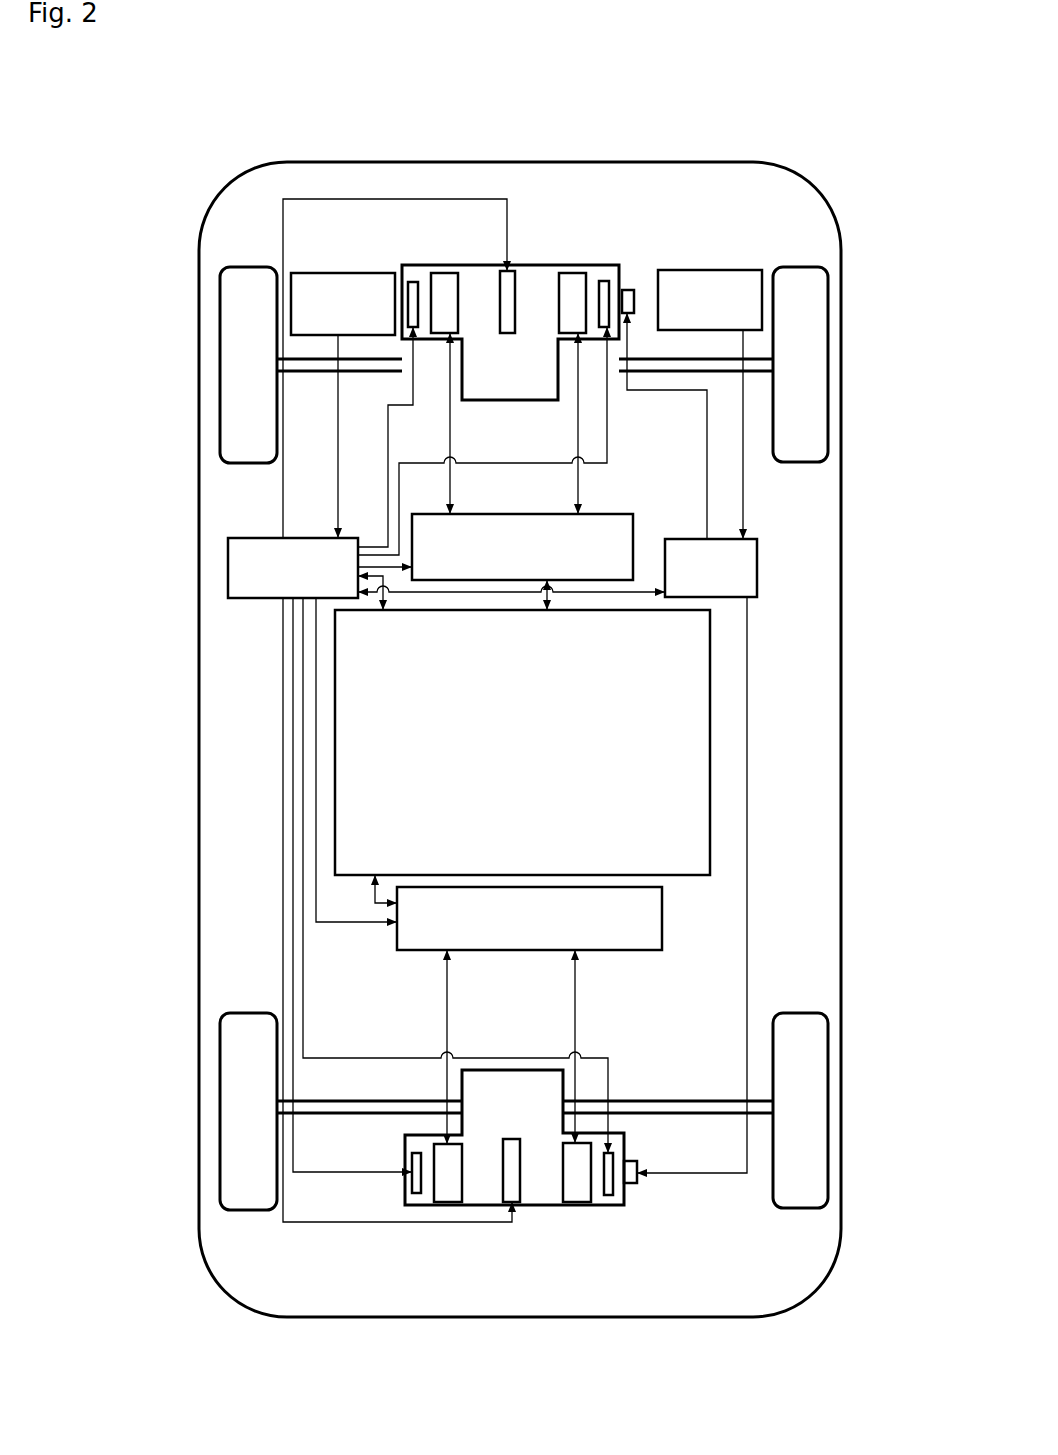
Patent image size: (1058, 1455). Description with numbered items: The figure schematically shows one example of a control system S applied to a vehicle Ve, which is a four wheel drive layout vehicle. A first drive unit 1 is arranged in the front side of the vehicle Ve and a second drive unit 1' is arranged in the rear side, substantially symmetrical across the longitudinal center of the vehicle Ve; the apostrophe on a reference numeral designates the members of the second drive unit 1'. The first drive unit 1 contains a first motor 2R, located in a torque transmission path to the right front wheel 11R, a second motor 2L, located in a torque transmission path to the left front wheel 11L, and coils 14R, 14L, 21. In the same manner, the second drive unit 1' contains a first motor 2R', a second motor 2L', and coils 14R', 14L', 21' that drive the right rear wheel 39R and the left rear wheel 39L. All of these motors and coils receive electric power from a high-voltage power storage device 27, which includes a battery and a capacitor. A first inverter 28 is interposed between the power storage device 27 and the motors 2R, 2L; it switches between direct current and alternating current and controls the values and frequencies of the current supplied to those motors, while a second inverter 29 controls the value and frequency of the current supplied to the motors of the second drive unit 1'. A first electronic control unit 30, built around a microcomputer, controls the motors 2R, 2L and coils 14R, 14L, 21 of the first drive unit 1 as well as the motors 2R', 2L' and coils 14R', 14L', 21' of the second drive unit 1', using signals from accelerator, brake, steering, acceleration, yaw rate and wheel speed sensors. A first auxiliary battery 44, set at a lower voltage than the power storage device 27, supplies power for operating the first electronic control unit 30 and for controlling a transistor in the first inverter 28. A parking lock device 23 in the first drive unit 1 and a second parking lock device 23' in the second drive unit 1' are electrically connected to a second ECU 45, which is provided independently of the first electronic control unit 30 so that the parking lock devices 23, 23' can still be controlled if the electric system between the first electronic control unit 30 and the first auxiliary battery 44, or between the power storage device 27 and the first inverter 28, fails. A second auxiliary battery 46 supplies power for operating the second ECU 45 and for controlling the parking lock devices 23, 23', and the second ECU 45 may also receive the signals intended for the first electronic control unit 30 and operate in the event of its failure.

The vehicle Ve is at (850, 160).
The control system S is at (637, 200).
The first drive unit 1 is at (510, 250).
The second drive unit 1' is at (514, 1219).
The second motor 2L is at (452, 278).
The first motor 2R is at (565, 277).
The second motor of second drive unit 2L' is at (460, 1209).
The first motor of second drive unit 2R' is at (578, 1204).
The left front wheel 11L is at (226, 320).
The right front wheel 11R is at (815, 315).
The left rear wheel 39L is at (226, 1090).
The right rear wheel 39R is at (815, 1093).
The coil 14L is at (403, 275).
The coil 14R is at (612, 274).
The coil of second drive unit 14L' is at (403, 1213).
The coil of second drive unit 14R' is at (636, 1209).
The coil 21 is at (512, 328).
The coil of second drive unit 21' is at (518, 1145).
The parking lock device 23 is at (657, 270).
The second parking lock device 23' is at (665, 1190).
The power storage device 27 is at (690, 872).
The first inverter 28 is at (622, 525).
The second inverter 29 is at (648, 942).
The first electronic control unit 30 is at (228, 572).
The first auxiliary battery 44 is at (338, 282).
The second ECU 45 is at (742, 558).
The second auxiliary battery 46 is at (741, 280).